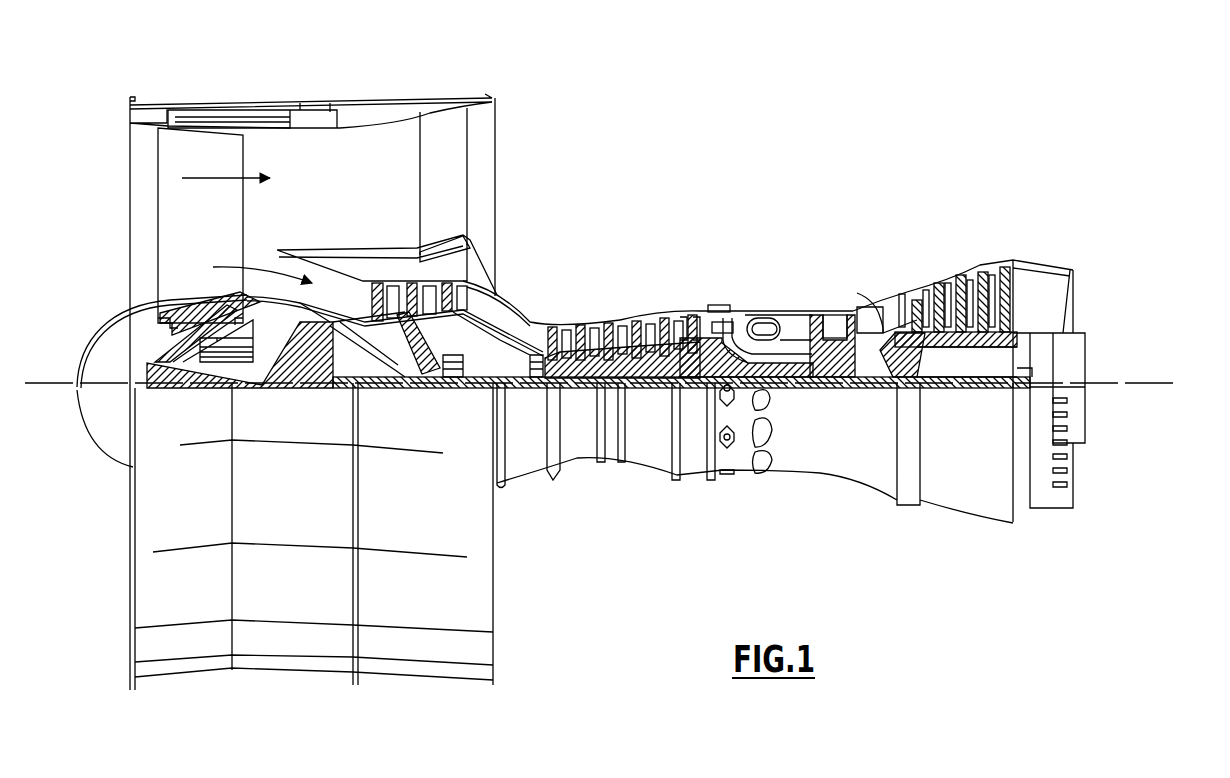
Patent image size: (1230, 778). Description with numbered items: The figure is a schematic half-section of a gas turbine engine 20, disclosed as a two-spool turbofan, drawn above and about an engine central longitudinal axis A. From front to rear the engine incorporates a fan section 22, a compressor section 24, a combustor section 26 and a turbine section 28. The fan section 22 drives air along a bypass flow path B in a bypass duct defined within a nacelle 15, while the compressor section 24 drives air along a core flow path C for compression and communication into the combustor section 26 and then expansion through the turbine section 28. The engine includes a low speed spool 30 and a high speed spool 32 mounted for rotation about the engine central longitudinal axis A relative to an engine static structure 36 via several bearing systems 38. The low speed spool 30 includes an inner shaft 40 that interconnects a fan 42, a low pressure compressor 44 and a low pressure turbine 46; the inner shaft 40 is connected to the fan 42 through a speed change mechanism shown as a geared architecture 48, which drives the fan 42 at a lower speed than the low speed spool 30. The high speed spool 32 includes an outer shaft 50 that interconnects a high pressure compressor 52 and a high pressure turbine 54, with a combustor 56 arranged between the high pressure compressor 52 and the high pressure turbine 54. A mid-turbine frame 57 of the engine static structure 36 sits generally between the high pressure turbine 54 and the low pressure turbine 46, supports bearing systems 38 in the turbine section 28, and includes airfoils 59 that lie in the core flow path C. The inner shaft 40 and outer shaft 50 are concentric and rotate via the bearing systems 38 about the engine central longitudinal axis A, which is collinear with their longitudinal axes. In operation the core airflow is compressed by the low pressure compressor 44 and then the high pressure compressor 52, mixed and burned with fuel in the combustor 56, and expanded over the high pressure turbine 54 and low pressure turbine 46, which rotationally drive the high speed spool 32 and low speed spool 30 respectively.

The nacelle 15 is at (315, 108).
The gas turbine engine 20 is at (776, 152).
The fan section 22 is at (241, 92).
The compressor section 24 is at (699, 309).
The combustor section 26 is at (781, 301).
The turbine section 28 is at (969, 315).
The low speed spool 30 is at (652, 395).
The high speed spool 32 is at (692, 322).
The engine static structure 36 is at (692, 478).
The bearing systems 38 is at (455, 382).
The inner shaft 40 is at (510, 390).
The fan 42 is at (200, 228).
The low pressure compressor 44 is at (412, 300).
The low pressure turbine 46 is at (964, 270).
The geared architecture 48 is at (318, 372).
The outer shaft 50 is at (778, 370).
The high pressure compressor 52 is at (623, 355).
The high pressure turbine 54 is at (835, 313).
The combustor 56 is at (767, 328).
The mid-turbine frame 57 is at (877, 294).
The airfoils 59 is at (905, 353).
The engine central longitudinal axis A is at (1163, 382).
The bypass flow path B is at (216, 177).
The core flow path C is at (254, 268).